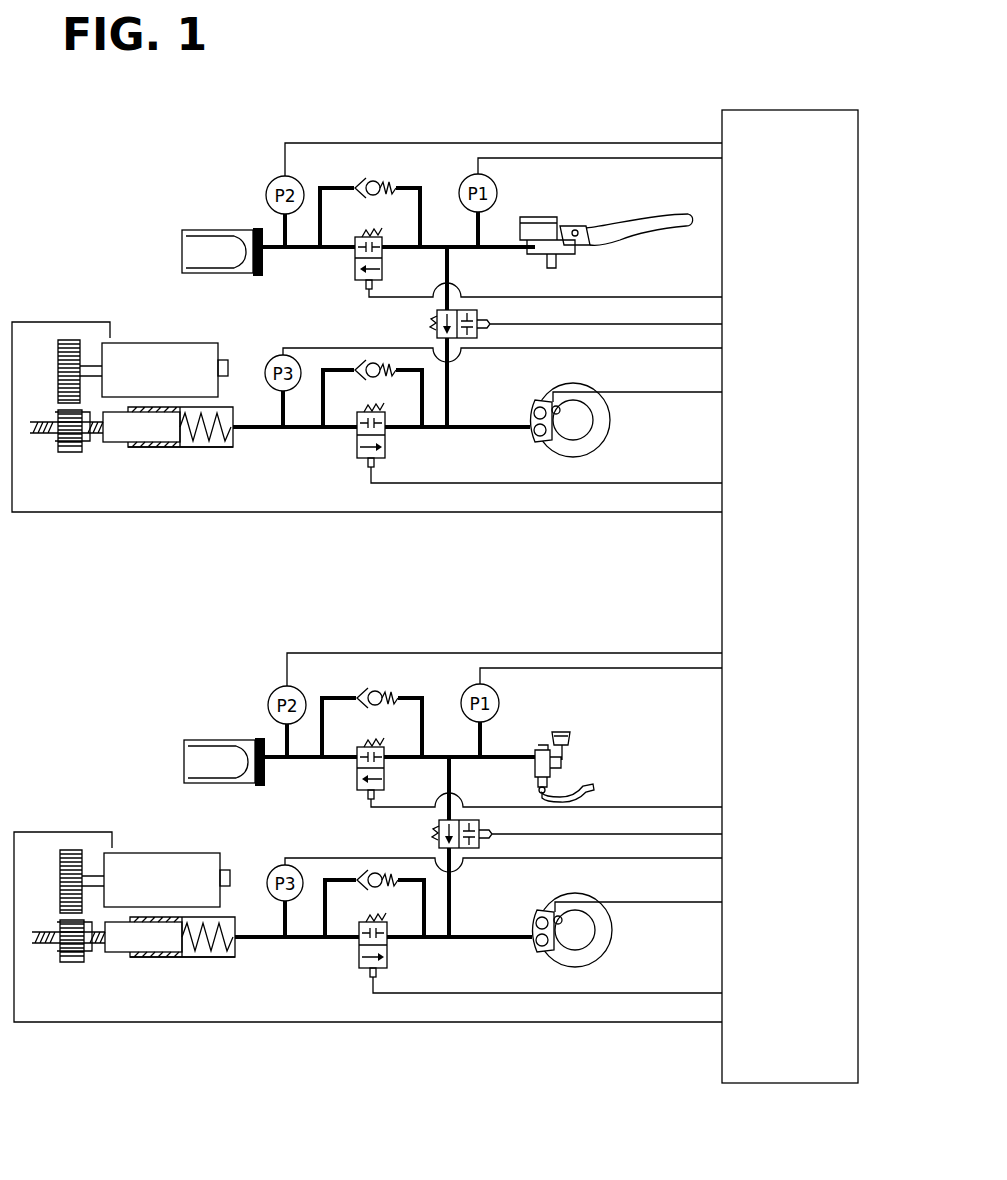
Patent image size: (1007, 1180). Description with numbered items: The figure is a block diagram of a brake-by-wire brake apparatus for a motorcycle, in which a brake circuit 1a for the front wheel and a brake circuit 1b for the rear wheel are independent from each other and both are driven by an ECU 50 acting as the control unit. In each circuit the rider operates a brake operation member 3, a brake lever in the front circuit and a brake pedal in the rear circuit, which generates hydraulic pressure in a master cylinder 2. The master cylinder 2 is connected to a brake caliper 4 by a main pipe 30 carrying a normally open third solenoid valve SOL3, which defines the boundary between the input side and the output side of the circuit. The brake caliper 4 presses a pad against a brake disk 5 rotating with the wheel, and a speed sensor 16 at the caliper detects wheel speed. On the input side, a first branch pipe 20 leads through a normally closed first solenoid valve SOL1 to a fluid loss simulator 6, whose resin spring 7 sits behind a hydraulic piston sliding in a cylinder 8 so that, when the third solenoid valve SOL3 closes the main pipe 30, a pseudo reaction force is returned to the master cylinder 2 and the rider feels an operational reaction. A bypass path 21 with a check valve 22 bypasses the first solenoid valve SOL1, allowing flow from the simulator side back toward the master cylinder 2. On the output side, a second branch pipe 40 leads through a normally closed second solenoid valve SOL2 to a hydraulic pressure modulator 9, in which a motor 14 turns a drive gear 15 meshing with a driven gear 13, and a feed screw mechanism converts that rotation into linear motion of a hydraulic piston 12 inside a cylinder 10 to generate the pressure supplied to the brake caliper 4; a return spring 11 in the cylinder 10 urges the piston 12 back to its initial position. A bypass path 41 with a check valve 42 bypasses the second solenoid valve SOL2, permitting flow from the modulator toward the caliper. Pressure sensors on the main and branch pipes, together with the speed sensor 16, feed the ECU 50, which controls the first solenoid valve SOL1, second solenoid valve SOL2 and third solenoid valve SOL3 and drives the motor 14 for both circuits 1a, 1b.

The brake circuit on a front wheel 1a is at (450, 106).
The brake circuit on a rear wheel 1b is at (449, 652).
The master cylinder 2 is at (540, 256).
The brake operation member 3 is at (637, 236).
The brake caliper 4 is at (535, 404).
The brake disk 5 is at (590, 447).
The fluid loss simulator 6 is at (168, 244).
The resin spring 7 is at (203, 245).
The cylinder 8 is at (230, 232).
The hydraulic pressure modulator 9 is at (180, 456).
The cylinder 10 is at (140, 447).
The return spring 11 is at (215, 442).
The hydraulic piston 12 is at (105, 442).
The driven gear 13 is at (66, 452).
The motor 14 is at (142, 360).
The drive gear 15 is at (66, 352).
The speed sensor 16 is at (600, 414).
The first branch pipe 20 is at (297, 249).
The bypass path 21 is at (330, 188).
The check valve 22 is at (358, 176).
The main pipe 30 is at (455, 378).
The second branch pipe 40 is at (297, 429).
The bypass path 41 is at (333, 372).
The check valve 42 is at (356, 360).
The ECU 50 is at (778, 1083).
The first solenoid valve SOL1 is at (350, 278).
The second solenoid valve SOL2 is at (350, 454).
The third solenoid valve SOL3 is at (468, 305).